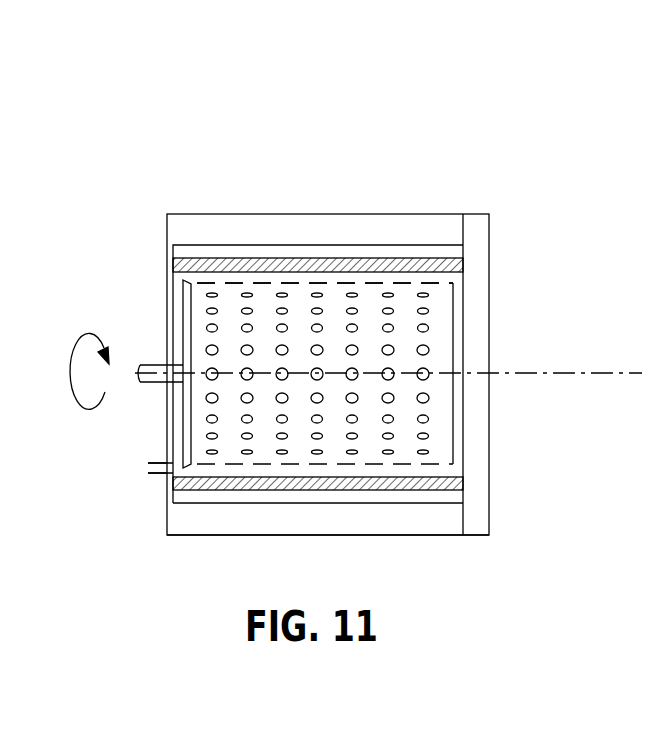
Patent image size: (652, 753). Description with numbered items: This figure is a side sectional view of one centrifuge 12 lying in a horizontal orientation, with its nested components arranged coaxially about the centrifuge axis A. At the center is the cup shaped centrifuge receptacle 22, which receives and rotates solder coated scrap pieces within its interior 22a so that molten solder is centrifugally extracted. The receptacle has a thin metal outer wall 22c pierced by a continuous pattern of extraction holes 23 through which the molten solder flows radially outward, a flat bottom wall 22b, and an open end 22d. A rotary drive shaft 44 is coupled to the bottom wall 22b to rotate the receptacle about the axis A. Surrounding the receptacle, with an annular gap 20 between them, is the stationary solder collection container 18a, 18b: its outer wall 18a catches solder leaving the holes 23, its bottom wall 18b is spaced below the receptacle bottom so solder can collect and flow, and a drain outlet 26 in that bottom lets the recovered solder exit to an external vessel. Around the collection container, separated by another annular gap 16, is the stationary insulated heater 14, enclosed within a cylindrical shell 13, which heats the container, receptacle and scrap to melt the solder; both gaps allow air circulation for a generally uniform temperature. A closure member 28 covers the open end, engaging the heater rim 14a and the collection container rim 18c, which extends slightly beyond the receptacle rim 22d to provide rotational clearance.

The centrifuge 12 is at (414, 82).
The shell 13 is at (403, 536).
The insulated heater 14 is at (357, 227).
The rim of the heater 14a is at (465, 517).
The annular gap 16 is at (399, 253).
The outer wall of the solder collection container 18a is at (294, 257).
The bottom wall of the solder collection container 18b is at (170, 295).
The open end of the solder collection container 18c is at (465, 485).
The annular gap 20 is at (259, 278).
The centrifuge receptacle 22 is at (329, 310).
The interior of the centrifuge receptacle 22a is at (446, 338).
The bottom wall of the centrifuge receptacle 22b is at (188, 332).
The outer wall of the centrifuge receptacle 22c is at (225, 284).
The open end of the centrifuge receptacle 22d is at (453, 302).
The extraction holes 23 is at (430, 397).
The drain outlet 26 is at (143, 466).
The closure member 28 is at (477, 251).
The rotary drive shaft 44 is at (150, 385).
The centrifuge axis A is at (602, 373).